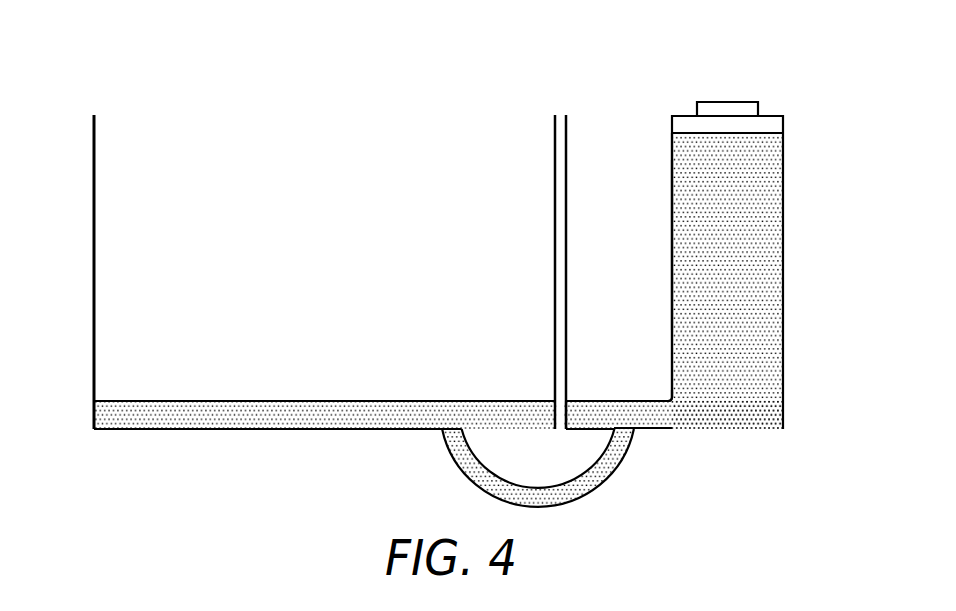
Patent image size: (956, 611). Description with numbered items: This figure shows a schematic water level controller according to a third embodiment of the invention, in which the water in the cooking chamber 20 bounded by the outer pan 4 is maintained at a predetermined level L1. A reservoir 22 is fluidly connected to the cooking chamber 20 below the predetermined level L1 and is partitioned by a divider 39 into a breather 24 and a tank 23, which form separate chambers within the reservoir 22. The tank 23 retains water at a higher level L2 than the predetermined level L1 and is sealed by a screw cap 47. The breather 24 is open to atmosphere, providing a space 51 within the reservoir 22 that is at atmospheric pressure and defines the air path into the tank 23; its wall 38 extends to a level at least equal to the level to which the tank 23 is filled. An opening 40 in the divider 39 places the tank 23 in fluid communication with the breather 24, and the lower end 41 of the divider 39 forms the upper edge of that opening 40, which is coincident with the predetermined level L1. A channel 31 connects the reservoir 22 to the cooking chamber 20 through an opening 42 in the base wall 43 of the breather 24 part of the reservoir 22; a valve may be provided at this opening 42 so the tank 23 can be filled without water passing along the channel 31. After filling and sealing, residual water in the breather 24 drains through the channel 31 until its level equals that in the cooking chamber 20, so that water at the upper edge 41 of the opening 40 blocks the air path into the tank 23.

The outer pan 4 is at (94, 213).
The cooking chamber 20 is at (338, 233).
The wall of the breather 38 is at (567, 139).
The space 51 is at (595, 313).
The reservoir 22 is at (778, 88).
The screw cap 47 is at (723, 102).
The higher level L2 is at (685, 132).
The breather 24 is at (672, 200).
The divider 39 is at (671, 268).
The tank 23 is at (784, 275).
The lower end of the divider 41 is at (664, 402).
The opening 40 is at (671, 420).
The predetermined level L1 is at (404, 400).
The base wall 43 is at (577, 430).
The opening 42 is at (625, 455).
The channel 31 is at (570, 506).